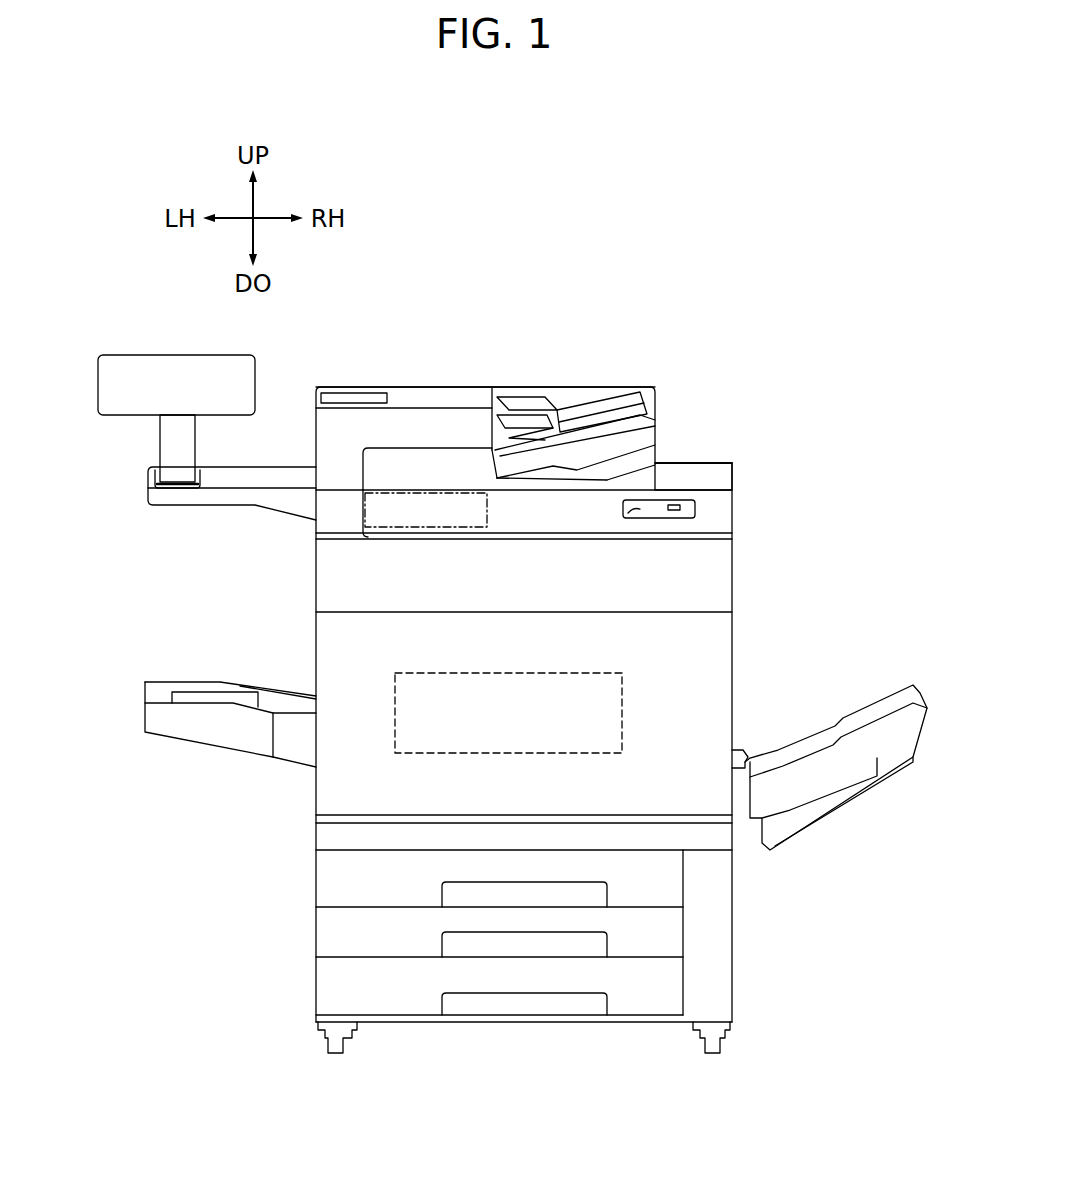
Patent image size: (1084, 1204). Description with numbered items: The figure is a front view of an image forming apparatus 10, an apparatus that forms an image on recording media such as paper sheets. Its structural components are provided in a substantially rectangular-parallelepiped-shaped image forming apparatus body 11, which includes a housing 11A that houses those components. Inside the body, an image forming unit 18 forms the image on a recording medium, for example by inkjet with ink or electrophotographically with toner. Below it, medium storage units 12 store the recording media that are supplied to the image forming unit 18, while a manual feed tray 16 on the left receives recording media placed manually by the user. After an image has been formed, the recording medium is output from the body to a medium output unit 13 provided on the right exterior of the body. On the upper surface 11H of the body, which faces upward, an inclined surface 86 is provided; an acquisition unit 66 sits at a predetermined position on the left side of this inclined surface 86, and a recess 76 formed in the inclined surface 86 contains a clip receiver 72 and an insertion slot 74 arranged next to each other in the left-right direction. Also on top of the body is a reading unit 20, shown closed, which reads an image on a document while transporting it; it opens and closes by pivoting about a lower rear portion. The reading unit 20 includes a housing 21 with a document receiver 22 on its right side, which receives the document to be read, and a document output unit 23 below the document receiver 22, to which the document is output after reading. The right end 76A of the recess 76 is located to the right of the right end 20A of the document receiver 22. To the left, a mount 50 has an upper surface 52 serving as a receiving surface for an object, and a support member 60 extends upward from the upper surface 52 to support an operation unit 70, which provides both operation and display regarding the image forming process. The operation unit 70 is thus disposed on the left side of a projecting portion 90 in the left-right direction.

The image forming apparatus 10 is at (748, 326).
The image forming apparatus body 11 is at (736, 637).
The housing 11A is at (733, 672).
The upper surface 11H is at (672, 469).
The medium storage unit 12 is at (314, 877).
The medium output unit 13 is at (892, 768).
The manual feed tray 16 is at (204, 741).
The image forming unit 18 is at (622, 707).
The reading unit 20 is at (452, 384).
The right end of the document receiver 20A is at (658, 455).
The housing 21 is at (408, 386).
The document receiver 22 is at (581, 406).
The document output unit 23 is at (641, 447).
The mount 50 is at (254, 502).
The upper surface 52 is at (287, 474).
The support member 60 is at (160, 431).
The acquisition unit 66 is at (443, 515).
The operation unit 70 is at (99, 390).
The clip receiver 72 is at (633, 513).
The insertion slot 74 is at (676, 500).
The recess 76 is at (661, 507).
The right end of the recess 76A is at (700, 507).
The inclined surface 86 is at (588, 535).
The projecting portion 90 is at (348, 540).